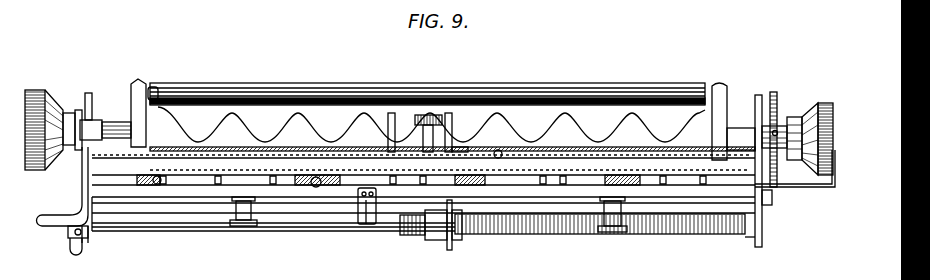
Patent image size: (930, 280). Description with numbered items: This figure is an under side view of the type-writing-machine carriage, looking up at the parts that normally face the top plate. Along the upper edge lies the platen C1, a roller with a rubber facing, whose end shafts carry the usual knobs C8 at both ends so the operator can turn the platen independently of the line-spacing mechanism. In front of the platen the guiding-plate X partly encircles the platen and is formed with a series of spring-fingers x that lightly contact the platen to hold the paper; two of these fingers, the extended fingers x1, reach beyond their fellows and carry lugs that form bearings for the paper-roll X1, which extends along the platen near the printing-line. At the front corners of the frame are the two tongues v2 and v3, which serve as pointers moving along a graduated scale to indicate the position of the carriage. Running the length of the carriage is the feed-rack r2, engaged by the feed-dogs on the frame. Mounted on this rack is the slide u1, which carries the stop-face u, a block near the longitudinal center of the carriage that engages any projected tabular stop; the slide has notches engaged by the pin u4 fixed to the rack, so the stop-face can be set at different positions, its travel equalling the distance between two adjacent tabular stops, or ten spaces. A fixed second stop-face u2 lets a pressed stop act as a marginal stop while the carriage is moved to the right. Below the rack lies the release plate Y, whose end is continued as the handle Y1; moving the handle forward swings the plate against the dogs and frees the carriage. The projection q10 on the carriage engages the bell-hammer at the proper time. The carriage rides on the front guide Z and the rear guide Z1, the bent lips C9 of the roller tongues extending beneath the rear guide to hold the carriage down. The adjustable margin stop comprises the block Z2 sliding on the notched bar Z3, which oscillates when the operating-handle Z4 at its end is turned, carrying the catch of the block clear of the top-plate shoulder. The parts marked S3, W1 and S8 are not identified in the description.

The knob C8 is at (63, 108).
The pointer tongue v2 is at (130, 88).
The release plate Y is at (93, 124).
The extended spring-finger x1 is at (168, 115).
The spring-finger x is at (222, 122).
The pin u4 is at (154, 147).
The slide u1 is at (250, 139).
The stop-face u is at (366, 137).
The notched bar Z3 is at (388, 132).
The rear guide Z1 is at (430, 116).
The second stop-face u2 is at (486, 134).
The platen C1 is at (431, 124).
The feed-rack r2 is at (572, 152).
The bearing S3 is at (615, 176).
The paper-roll X1 is at (552, 94).
The pointer tongue v3 is at (718, 94).
The ratchet rod W1 is at (773, 96).
The bracket S8 is at (782, 188).
The guiding-plate X is at (706, 224).
The front guide Z is at (624, 228).
The lip C9 is at (237, 228).
The margin-stop block Z2 is at (456, 226).
The operating-handle Z4 is at (70, 247).
The bell-hammer projection q10 is at (372, 226).
The release handle Y1 is at (44, 222).